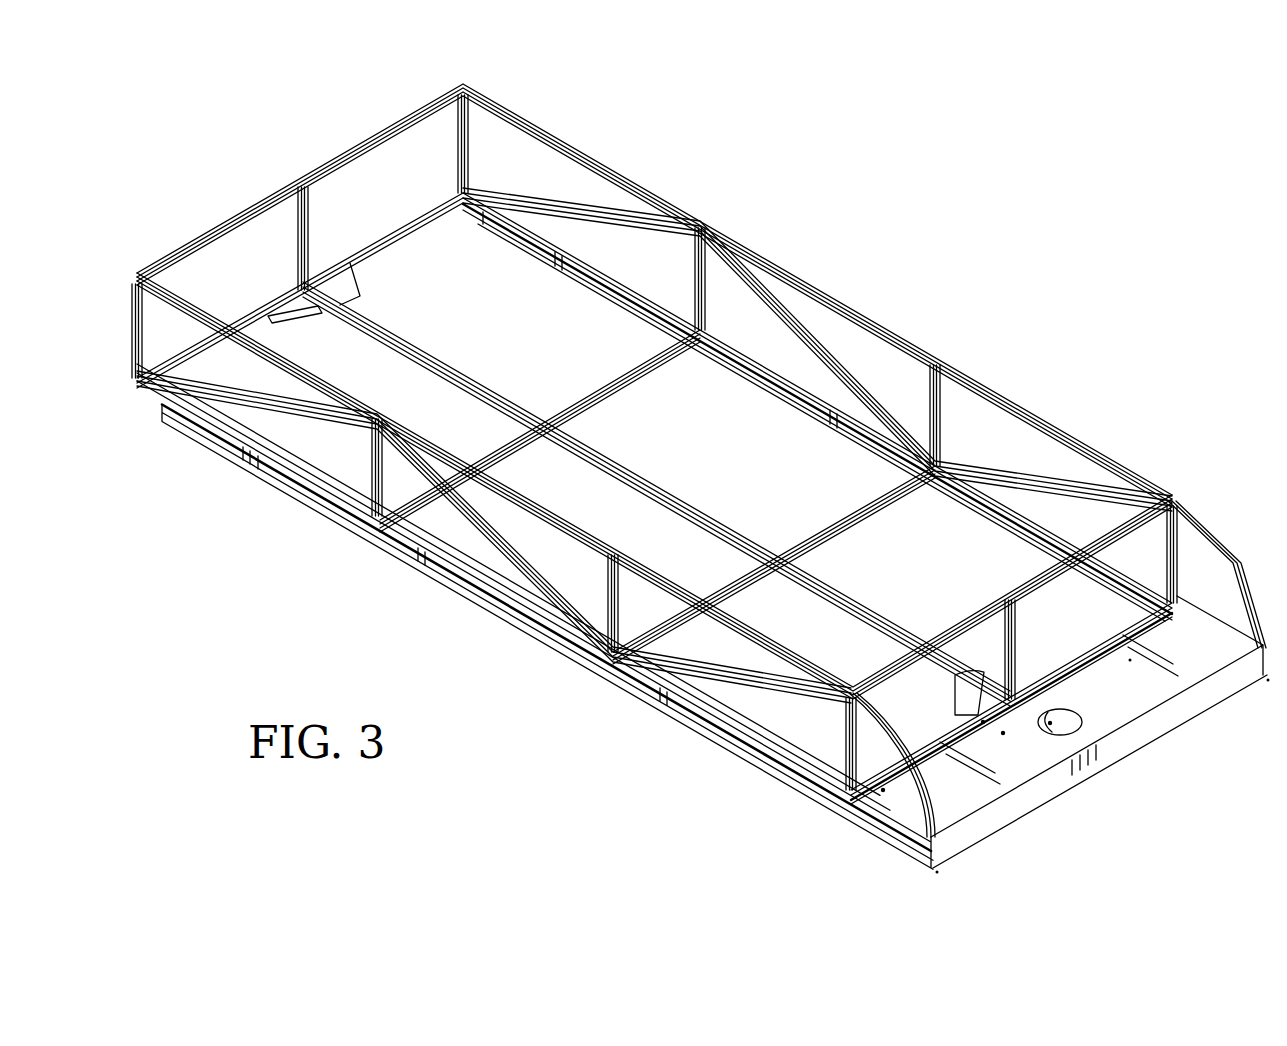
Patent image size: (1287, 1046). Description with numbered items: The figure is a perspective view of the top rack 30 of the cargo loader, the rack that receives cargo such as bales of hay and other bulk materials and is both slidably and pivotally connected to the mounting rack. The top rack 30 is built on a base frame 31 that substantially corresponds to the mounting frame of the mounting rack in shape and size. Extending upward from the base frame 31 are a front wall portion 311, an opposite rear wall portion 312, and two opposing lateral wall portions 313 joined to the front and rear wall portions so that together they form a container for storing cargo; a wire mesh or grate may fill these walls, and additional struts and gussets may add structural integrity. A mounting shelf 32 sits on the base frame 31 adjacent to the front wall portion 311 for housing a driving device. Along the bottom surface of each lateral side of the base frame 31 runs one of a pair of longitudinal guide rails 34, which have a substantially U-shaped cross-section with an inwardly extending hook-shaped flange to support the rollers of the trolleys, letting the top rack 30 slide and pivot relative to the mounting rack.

The top rack 30 is at (263, 163).
The base frame 31 is at (780, 372).
The front wall portion 311 is at (1040, 567).
The rear wall portion 312 is at (305, 188).
The lateral wall portions 313 is at (633, 182).
The mounting shelf 32 is at (1110, 693).
The longitudinal guide rails 34 is at (213, 455).